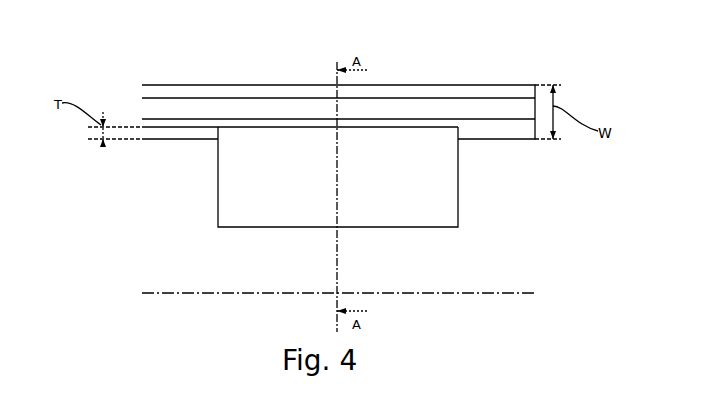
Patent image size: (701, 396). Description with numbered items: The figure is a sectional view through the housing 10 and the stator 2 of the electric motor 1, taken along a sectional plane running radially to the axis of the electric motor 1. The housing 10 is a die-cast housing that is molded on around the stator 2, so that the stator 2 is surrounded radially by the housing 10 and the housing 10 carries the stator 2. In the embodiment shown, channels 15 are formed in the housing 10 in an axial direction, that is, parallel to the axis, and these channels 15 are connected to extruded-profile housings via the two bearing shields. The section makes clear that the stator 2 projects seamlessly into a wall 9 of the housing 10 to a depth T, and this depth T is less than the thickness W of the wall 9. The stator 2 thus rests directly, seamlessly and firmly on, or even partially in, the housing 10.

The electric motor 1 is at (211, 76).
The housing 10 is at (469, 84).
The channels 15 is at (149, 106).
The wall 9 is at (503, 138).
The stator 2 is at (224, 188).